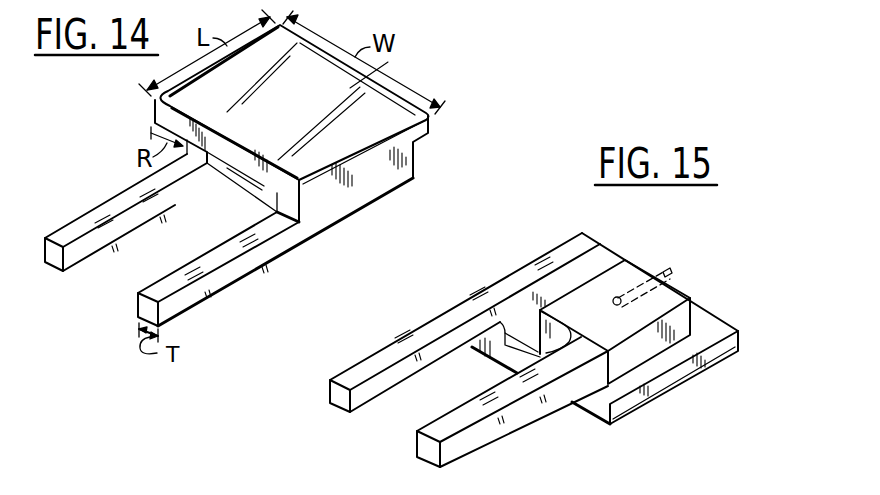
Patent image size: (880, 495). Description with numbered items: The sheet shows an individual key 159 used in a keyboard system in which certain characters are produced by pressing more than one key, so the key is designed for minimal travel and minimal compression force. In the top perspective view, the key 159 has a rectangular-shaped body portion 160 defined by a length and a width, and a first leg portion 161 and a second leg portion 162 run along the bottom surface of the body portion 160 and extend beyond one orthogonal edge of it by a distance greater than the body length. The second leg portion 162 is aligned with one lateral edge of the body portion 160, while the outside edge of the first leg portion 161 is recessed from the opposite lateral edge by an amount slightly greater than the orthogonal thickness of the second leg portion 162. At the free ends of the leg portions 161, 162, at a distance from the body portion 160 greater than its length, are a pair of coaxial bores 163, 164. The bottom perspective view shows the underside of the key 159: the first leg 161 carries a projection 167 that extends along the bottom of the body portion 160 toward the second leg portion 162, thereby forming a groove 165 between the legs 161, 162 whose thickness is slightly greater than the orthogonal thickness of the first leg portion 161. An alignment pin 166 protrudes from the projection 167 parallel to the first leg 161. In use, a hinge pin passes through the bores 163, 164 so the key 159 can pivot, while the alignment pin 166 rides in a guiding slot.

In FIG. 14, the key 159 is at (118, 85).
In FIG. 15, the key 159 is at (478, 262).
In FIG. 14, the body portion 160 is at (387, 120).
In FIG. 15, the body portion 160 is at (687, 380).
In FIG. 14, the first leg portion 161 is at (115, 193).
In FIG. 15, the first leg portion 161 is at (533, 417).
In FIG. 14, the second leg portion 162 is at (240, 231).
In FIG. 15, the second leg portion 162 is at (407, 321).
In FIG. 14, the bore 163 is at (78, 258).
In FIG. 15, the bore 163 is at (455, 457).
In FIG. 14, the bore 164 is at (175, 315).
In FIG. 15, the bore 164 is at (365, 405).
In FIG. 15, the groove 165 is at (577, 277).
In FIG. 15, the alignment pin 166 is at (645, 280).
In FIG. 15, the projection 167 is at (568, 313).